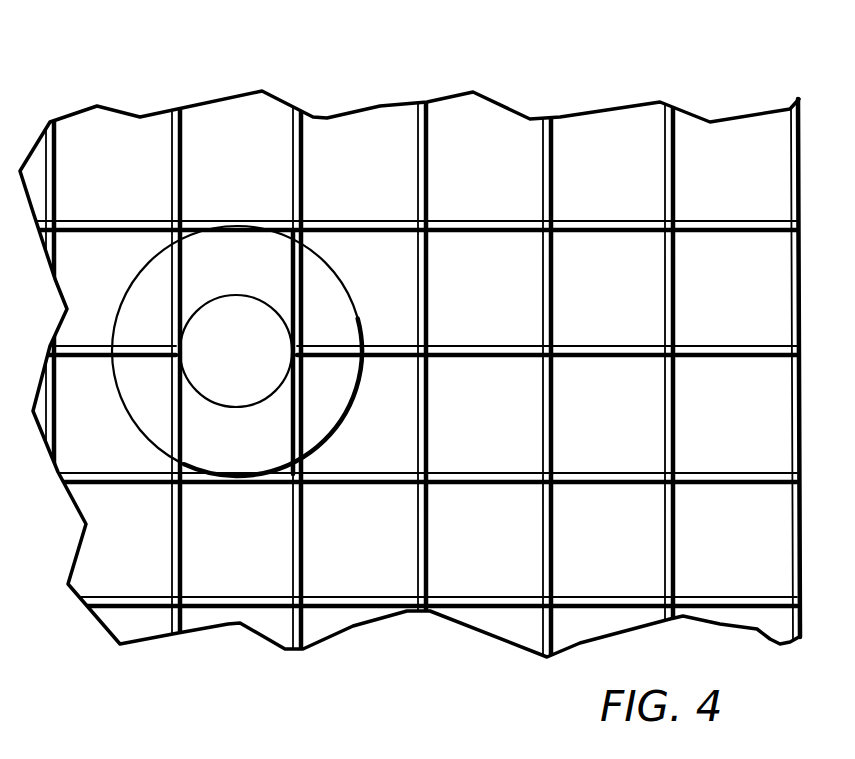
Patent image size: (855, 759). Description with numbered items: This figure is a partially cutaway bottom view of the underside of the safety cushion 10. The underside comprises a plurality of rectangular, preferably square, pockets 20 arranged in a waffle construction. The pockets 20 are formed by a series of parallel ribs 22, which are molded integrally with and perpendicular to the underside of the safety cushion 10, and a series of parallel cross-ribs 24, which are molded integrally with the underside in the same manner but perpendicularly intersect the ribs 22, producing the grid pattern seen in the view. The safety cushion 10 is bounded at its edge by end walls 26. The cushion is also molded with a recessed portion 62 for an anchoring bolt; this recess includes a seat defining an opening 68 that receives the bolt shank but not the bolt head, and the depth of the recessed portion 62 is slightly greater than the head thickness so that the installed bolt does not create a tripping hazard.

The safety cushion 10 is at (425, 339).
The rectangular pockets 20 is at (340, 127).
The ribs 22 is at (539, 383).
The cross-ribs 24 is at (618, 358).
The end walls 26 is at (799, 259).
The recessed portion 62 is at (342, 314).
The opening 68 is at (217, 330).